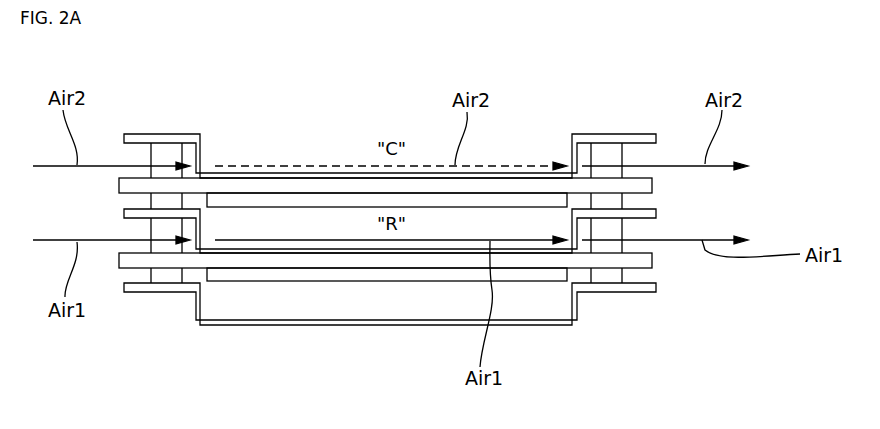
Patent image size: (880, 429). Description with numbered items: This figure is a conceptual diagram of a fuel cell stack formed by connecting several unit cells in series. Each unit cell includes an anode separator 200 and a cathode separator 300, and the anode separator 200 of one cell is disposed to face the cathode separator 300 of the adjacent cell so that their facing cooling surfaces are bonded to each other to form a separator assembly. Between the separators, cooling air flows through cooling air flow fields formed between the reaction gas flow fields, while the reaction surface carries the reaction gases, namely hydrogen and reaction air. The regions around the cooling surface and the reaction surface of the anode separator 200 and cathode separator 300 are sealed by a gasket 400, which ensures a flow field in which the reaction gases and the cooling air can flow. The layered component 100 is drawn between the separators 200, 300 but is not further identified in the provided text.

The heat exchange element 100 is at (555, 199).
The anode separator 200 is at (650, 136).
The cathode separator 300 is at (653, 183).
The gasket 400 is at (185, 158).